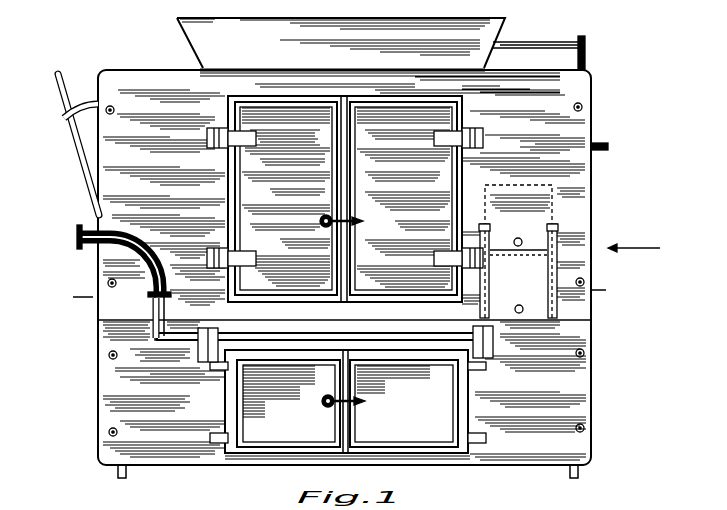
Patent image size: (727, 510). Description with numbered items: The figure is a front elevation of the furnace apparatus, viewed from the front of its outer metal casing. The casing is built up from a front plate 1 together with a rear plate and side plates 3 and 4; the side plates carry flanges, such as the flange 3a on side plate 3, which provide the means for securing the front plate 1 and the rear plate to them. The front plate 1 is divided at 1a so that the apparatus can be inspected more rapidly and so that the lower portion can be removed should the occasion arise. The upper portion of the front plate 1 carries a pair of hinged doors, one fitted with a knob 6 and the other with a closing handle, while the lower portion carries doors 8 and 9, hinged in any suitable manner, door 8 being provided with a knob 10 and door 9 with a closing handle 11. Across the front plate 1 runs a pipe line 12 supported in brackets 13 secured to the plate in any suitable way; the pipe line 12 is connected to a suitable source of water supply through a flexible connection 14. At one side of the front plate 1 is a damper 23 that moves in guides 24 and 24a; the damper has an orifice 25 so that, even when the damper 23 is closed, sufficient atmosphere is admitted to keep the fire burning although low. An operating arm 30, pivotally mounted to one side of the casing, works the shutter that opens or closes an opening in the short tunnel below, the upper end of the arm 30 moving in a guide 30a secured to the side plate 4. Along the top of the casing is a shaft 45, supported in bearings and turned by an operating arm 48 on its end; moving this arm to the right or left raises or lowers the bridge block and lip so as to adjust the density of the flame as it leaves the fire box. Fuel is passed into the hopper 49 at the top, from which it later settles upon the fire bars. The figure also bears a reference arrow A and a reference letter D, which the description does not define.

The front plate 1 is at (125, 195).
The division of the front plate 1a is at (98, 320).
The side plate 3 is at (334, 199).
The flange 3a is at (416, 198).
The side plate 4 is at (362, 223).
The knob 6 is at (325, 228).
The door 8 is at (339, 401).
The door 9 is at (418, 403).
The knob 10 is at (322, 399).
The closing handle 11 is at (365, 405).
The pipe line 12 is at (280, 333).
The brackets 13 is at (209, 354).
The flexible connection 14 is at (95, 250).
The damper 23 is at (518, 251).
The guide 24 is at (492, 236).
The guide 24a is at (556, 236).
The orifice 25 is at (530, 308).
The operating arm 30 is at (80, 155).
The guide 30a is at (64, 122).
The shaft 45 is at (527, 43).
The operating arm 48 is at (594, 118).
The hopper 49 is at (287, 28).
The direction arrow A is at (642, 249).
The section line D is at (345, 289).